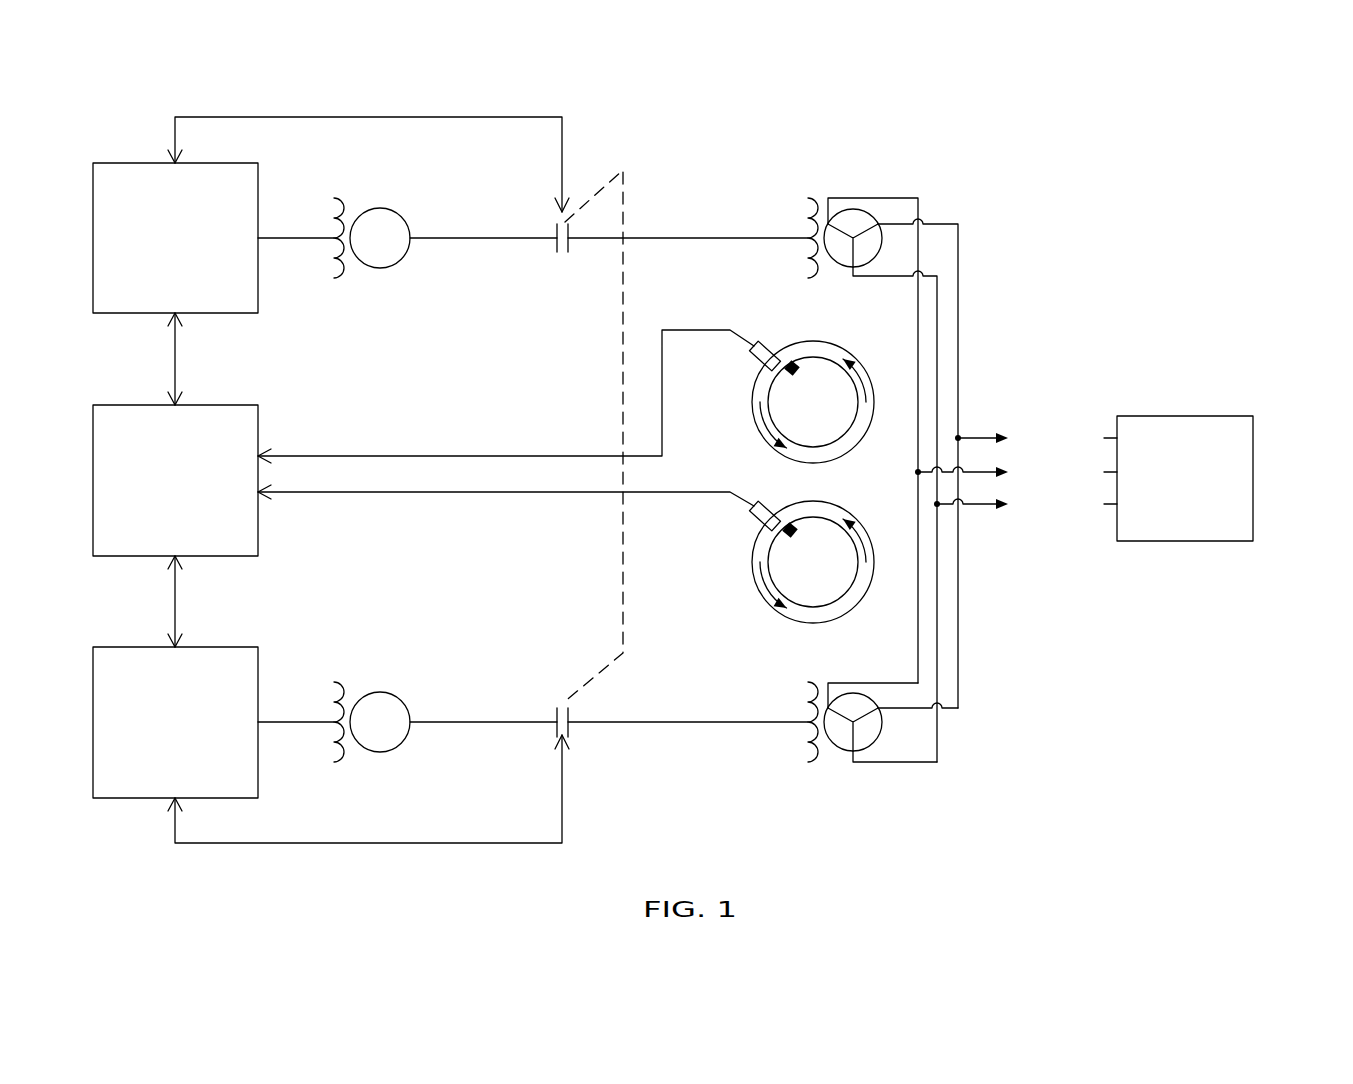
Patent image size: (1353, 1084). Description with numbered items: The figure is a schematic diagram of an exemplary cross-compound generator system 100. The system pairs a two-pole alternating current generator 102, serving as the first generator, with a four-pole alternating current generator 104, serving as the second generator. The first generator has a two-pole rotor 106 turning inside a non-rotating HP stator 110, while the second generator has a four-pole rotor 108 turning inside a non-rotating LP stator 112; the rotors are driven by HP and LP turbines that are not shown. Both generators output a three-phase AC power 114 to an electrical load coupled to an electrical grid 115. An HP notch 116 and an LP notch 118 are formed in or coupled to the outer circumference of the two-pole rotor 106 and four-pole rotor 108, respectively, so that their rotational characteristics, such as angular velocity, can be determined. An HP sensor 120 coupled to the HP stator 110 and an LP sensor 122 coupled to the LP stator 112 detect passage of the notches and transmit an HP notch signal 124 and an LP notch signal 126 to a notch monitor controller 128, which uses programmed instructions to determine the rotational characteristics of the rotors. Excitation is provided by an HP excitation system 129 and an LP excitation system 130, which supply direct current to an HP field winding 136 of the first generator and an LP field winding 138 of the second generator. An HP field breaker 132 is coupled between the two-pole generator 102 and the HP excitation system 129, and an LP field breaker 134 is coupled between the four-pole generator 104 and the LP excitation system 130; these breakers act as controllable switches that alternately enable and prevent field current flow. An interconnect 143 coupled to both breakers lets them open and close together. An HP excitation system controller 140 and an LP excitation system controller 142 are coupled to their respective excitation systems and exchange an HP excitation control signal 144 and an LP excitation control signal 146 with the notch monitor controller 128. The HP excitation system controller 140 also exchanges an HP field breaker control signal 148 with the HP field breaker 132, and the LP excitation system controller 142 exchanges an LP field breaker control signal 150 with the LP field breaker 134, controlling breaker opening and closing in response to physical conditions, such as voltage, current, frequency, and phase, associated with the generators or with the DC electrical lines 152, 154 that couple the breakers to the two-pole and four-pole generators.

The cross-compound generator system 100 is at (1243, 138).
The 2-pole AC generator 102 is at (816, 444).
The 4-pole AC generator 104 is at (842, 723).
The 2-P rotor 106 is at (838, 440).
The 4-P rotor 108 is at (838, 583).
The HP stator 110 is at (758, 428).
The LP stator 112 is at (758, 588).
The 3-phase AC power 114 is at (1042, 405).
The electrical grid 115 is at (1203, 519).
The HP notch 116 is at (795, 360).
The LP notch 118 is at (789, 522).
The HP sensor 120 is at (753, 368).
The LP sensor 122 is at (753, 528).
The HP notch signal 124 is at (422, 456).
The LP notch signal 126 is at (422, 492).
The notch monitor controller 128 is at (193, 538).
The HP excitation system 129 is at (407, 285).
The LP excitation system 130 is at (407, 769).
The HP field breaker 132 is at (550, 220).
The LP field breaker 134 is at (550, 705).
The HP field winding 136 is at (803, 270).
The LP field winding 138 is at (803, 755).
The HP excitation system controller 140 is at (193, 296).
The LP excitation system controller 142 is at (193, 779).
The interconnect 143 is at (623, 570).
The HP excitation control signal 144 is at (175, 360).
The LP excitation control signal 146 is at (175, 604).
The HP field breaker control signal 148 is at (318, 117).
The LP field breaker control signal 150 is at (320, 843).
The DC electrical line 152 is at (422, 240).
The DC electrical line 154 is at (422, 724).